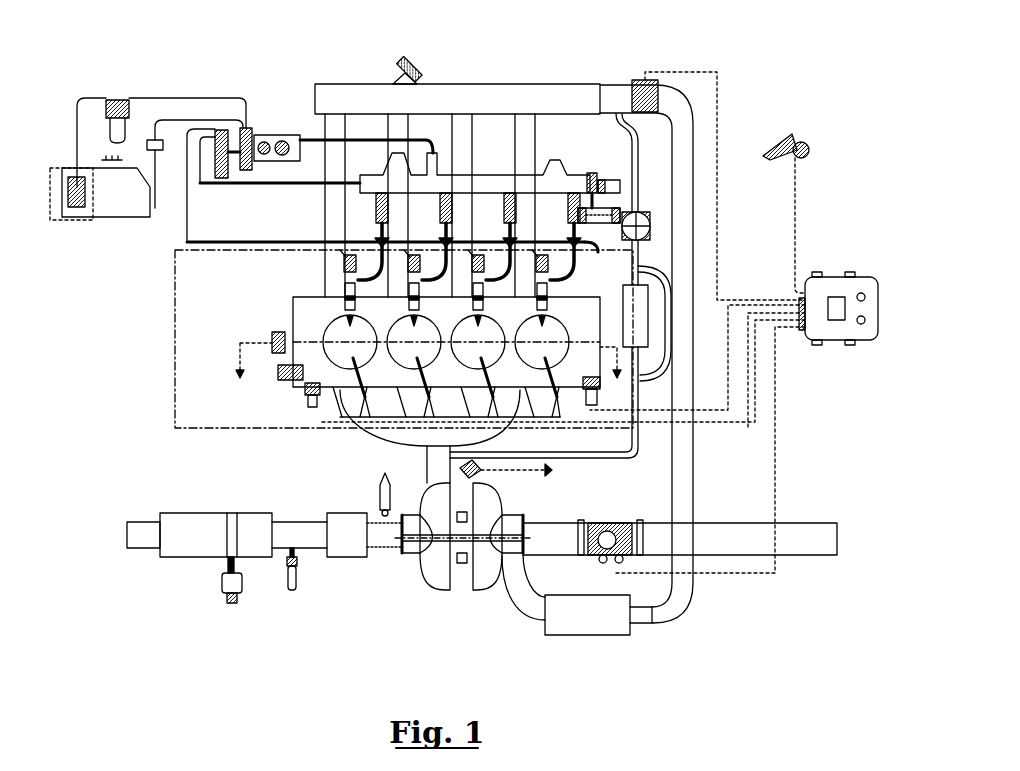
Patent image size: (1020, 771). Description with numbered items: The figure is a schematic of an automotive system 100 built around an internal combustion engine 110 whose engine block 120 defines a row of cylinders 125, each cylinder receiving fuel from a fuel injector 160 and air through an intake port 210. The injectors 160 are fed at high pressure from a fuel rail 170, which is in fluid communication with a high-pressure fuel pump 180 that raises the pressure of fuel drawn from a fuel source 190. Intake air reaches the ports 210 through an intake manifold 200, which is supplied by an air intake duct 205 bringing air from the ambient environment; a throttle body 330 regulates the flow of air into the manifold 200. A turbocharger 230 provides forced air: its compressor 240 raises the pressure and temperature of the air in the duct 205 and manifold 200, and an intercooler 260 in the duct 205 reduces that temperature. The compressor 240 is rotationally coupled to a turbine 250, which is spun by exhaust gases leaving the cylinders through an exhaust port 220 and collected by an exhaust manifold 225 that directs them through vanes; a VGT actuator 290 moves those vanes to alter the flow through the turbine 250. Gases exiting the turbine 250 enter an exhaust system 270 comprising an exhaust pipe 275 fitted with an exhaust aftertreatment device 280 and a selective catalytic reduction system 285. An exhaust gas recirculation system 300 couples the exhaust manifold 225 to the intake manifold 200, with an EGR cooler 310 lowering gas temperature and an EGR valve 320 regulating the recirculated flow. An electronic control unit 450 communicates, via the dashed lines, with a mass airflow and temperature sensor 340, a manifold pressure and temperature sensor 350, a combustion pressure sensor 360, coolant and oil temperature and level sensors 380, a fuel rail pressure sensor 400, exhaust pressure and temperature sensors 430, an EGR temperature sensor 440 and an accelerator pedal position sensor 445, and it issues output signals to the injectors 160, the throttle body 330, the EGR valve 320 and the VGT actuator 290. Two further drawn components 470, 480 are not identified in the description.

The automotive system 100 is at (231, 70).
The internal combustion engine 110 is at (551, 73).
The engine block 120 is at (338, 297).
The cylinder 125 is at (566, 318).
The fuel injector 160 is at (347, 283).
The fuel rail 170 is at (358, 186).
The high-pressure fuel pump 180 is at (268, 122).
The fuel source 190 is at (122, 205).
The intake manifold 200 is at (470, 100).
The air intake duct 205 is at (690, 495).
The intake port 210 is at (340, 298).
The exhaust port 220 is at (342, 393).
The exhaust manifold 225 is at (430, 432).
The turbocharger 230 is at (432, 598).
The compressor 240 is at (490, 563).
The turbine 250 is at (433, 563).
The intercooler 260 is at (610, 620).
The exhaust system 270 is at (199, 504).
The exhaust pipe 275 is at (140, 537).
The exhaust aftertreatment device 280 is at (185, 538).
The selective catalytic reduction system 285 is at (338, 552).
The VGT actuator 290 is at (475, 468).
The exhaust gas recirculation system 300 is at (607, 463).
The EGR cooler 310 is at (640, 335).
The EGR valve 320 is at (641, 208).
The throttle body 330 is at (643, 72).
The mass airflow and temperature sensor 340 is at (605, 559).
The manifold pressure and temperature sensor 350 is at (407, 67).
The combustion pressure sensor 360 is at (420, 405).
The coolant and oil temperature and level sensors 380 is at (307, 397).
The fuel rail pressure sensor 400 is at (690, 88).
The exhaust pressure and temperature sensors 430 is at (232, 607).
The EGR temperature sensor 440 is at (642, 250).
The accelerator pedal position sensor 445 is at (801, 140).
The electronic control unit 450 is at (846, 275).
The pressure sensor 470 is at (378, 492).
The throttle position sensor 480 is at (288, 583).